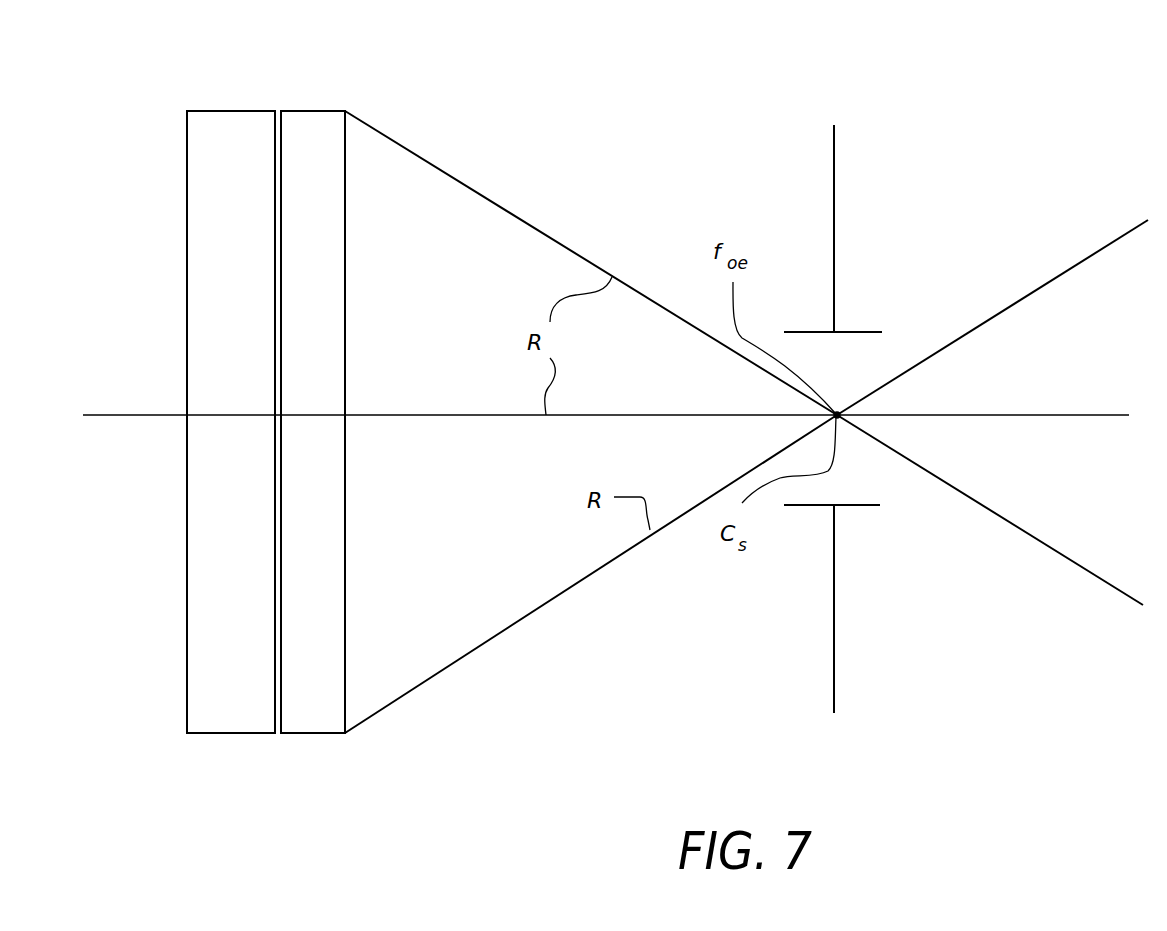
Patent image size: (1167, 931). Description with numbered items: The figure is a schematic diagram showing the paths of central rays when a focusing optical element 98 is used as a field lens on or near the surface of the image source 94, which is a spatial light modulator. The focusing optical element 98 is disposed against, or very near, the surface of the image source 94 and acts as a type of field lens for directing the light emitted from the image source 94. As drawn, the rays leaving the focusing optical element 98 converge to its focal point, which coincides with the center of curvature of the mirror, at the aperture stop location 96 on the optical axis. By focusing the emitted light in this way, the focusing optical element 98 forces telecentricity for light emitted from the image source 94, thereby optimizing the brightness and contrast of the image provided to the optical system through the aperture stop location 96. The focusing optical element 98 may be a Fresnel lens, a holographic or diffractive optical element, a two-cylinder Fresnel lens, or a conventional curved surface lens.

The image source 94 is at (222, 733).
The aperture stop location 96 is at (847, 367).
The focusing optical element 98 is at (347, 111).